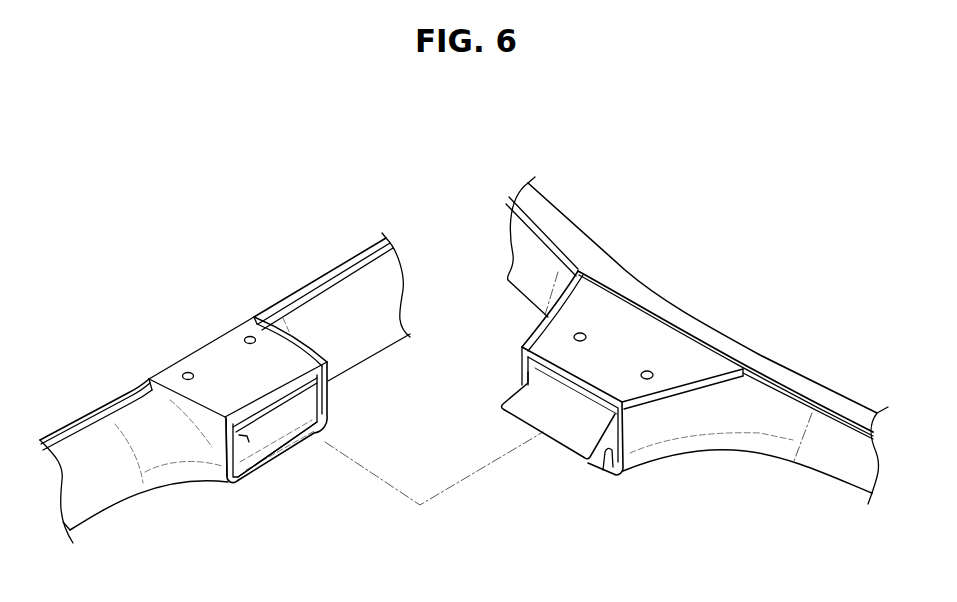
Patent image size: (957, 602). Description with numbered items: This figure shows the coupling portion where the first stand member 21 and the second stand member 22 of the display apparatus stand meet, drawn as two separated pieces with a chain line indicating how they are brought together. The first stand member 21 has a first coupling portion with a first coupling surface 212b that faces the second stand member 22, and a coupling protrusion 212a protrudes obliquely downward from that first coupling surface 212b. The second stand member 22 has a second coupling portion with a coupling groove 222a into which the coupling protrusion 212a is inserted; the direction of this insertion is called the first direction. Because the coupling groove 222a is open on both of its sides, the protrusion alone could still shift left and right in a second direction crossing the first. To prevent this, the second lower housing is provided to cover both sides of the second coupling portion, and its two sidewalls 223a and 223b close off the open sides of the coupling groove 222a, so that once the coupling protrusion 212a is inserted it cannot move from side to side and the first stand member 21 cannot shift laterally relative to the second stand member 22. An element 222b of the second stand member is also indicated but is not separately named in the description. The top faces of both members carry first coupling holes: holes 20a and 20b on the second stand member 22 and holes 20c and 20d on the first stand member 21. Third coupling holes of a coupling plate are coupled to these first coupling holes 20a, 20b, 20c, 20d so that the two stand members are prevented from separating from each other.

The first stand member 21 is at (691, 348).
The second stand member 22 is at (225, 368).
The first coupling hole 20a is at (187, 372).
The first coupling hole 20b is at (250, 336).
The first coupling hole 20c is at (648, 370).
The first coupling hole 20d is at (583, 332).
The coupling protrusion 212a is at (564, 437).
The first coupling surface 212b is at (606, 462).
The coupling groove 222a is at (244, 440).
The insertion groove bottom 222b is at (283, 443).
The sidewall 223a is at (213, 426).
The sidewall 223b is at (310, 397).